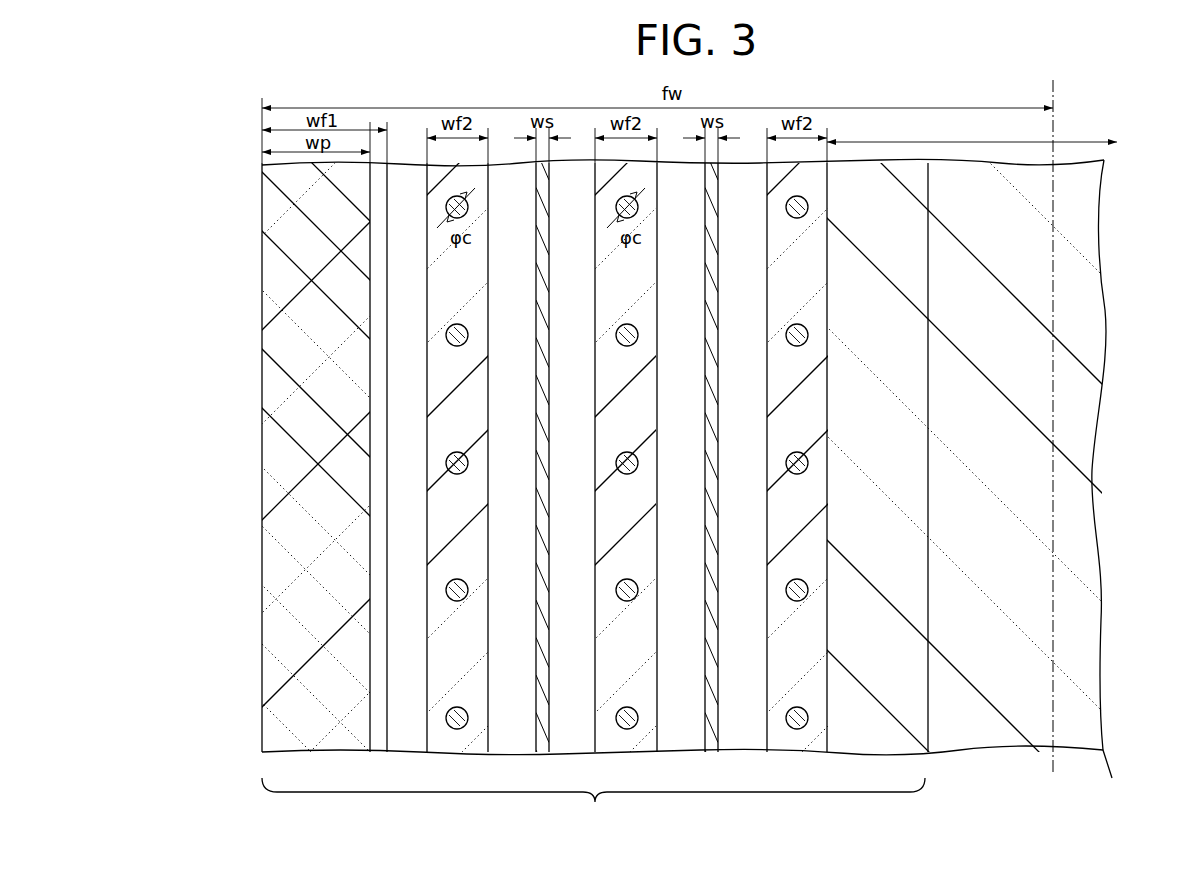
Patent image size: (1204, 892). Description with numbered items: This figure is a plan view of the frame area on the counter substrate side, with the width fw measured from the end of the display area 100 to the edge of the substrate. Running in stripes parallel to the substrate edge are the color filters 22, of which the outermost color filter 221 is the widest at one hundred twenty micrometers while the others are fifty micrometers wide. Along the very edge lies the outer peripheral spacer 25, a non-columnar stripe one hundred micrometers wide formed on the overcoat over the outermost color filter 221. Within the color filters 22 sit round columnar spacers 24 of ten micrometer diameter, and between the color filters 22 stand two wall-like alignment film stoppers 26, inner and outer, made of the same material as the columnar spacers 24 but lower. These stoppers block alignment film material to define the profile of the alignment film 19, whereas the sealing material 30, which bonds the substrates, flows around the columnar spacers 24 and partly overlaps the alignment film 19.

The display area 100 is at (1055, 100).
The alignment film 19 is at (902, 252).
The outermost color filter 221 is at (377, 295).
The outer peripheral spacer 25 is at (278, 377).
The color filter 22 is at (808, 763).
The columnar spacer 24 is at (458, 728).
The alignment film stopper 26 is at (715, 763).
The sealing material 30 is at (593, 808).